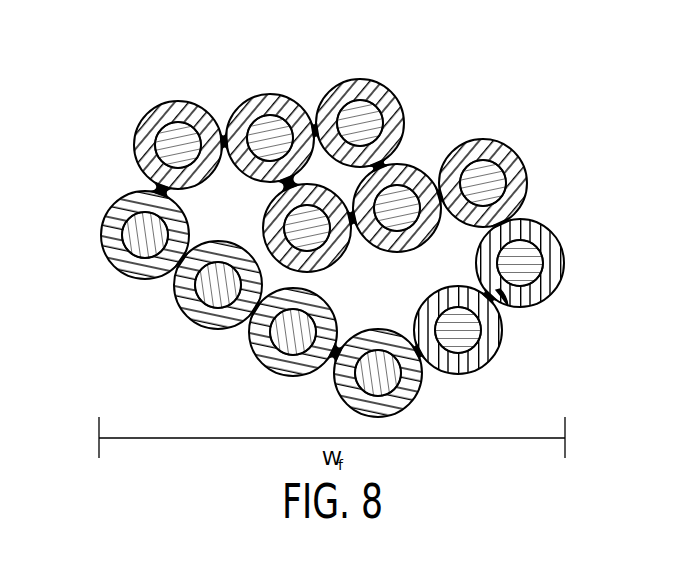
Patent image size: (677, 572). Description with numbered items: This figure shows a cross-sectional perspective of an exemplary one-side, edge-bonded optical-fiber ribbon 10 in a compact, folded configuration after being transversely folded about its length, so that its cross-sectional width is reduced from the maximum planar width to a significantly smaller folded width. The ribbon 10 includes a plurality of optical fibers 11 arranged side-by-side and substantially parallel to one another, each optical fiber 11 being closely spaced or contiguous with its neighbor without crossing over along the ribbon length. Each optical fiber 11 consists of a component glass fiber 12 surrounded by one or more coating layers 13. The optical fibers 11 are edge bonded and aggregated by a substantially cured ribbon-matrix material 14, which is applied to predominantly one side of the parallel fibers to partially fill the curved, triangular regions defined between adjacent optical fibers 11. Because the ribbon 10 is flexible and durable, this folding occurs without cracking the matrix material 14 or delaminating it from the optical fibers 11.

The optical-fiber ribbon 10 is at (364, 211).
The optical fiber 11 is at (530, 154).
The component glass fiber 12 is at (533, 249).
The coating layer 13 is at (551, 245).
The ribbon-matrix material 14 is at (508, 298).